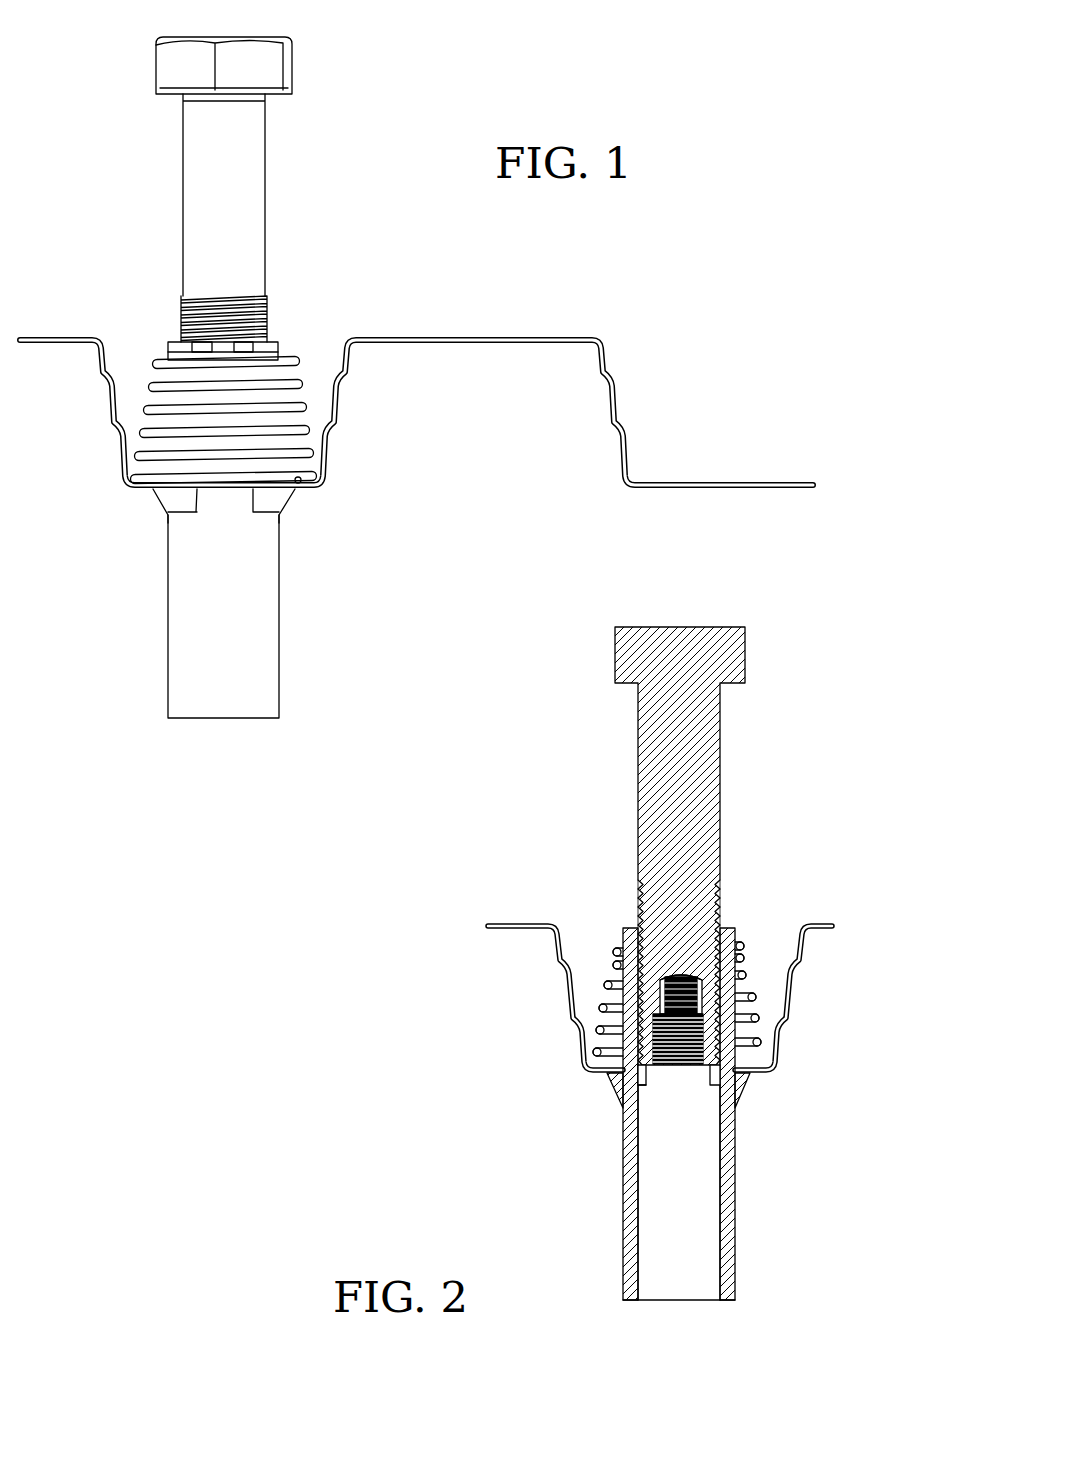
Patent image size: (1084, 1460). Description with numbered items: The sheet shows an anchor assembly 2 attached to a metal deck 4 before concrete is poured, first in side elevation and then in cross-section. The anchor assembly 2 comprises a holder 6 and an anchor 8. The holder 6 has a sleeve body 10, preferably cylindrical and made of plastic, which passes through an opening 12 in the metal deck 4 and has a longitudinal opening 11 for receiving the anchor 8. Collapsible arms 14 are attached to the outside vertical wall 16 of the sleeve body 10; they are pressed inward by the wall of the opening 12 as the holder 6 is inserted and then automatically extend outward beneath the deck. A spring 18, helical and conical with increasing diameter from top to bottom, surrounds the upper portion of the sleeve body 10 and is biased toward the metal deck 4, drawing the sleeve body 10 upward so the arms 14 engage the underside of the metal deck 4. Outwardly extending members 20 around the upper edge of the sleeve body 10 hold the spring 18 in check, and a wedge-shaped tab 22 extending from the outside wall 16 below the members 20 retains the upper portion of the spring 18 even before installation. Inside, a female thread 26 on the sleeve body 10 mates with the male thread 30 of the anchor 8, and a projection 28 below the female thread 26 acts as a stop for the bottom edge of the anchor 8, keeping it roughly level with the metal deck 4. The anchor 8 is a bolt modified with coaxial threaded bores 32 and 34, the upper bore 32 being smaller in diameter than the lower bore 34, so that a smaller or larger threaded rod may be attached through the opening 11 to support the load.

In FIG. 1, the anchor assembly 2 is at (274, 189).
In FIG. 1, the metal deck 4 is at (505, 338).
In FIG. 2, the metal deck 4 is at (812, 923).
In FIG. 1, the holder 6 is at (222, 603).
In FIG. 2, the holder 6 is at (681, 1109).
In FIG. 1, the anchor 8 is at (253, 189).
In FIG. 2, the anchor 8 is at (724, 754).
In FIG. 2, the sleeve body 10 is at (736, 1257).
In FIG. 2, the longitudinal opening 11 is at (660, 932).
In FIG. 2, the opening 12 is at (645, 1092).
In FIG. 1, the collapsible arms 14 is at (152, 496).
In FIG. 2, the collapsible arms 14 is at (606, 1083).
In FIG. 1, the outside vertical wall 16 is at (192, 607).
In FIG. 2, the outside vertical wall 16 is at (622, 1232).
In FIG. 1, the spring 18 is at (300, 413).
In FIG. 2, the spring 18 is at (747, 940).
In FIG. 1, the outwardly extending members 20 is at (170, 348).
In FIG. 1, the wedge-shaped tab 22 is at (318, 339).
In FIG. 2, the female thread 26 is at (630, 1020).
In FIG. 2, the projection 28 is at (709, 1086).
In FIG. 1, the male thread 30 is at (263, 298).
In FIG. 2, the male thread 30 is at (625, 975).
In FIG. 2, the upper threaded bore 32 is at (699, 993).
In FIG. 2, the lower threaded bore 34 is at (705, 1033).